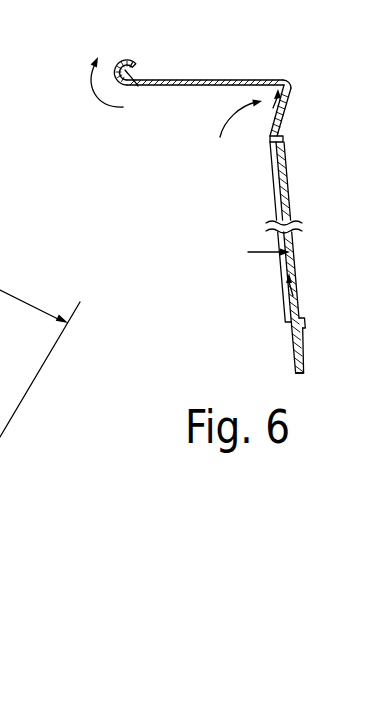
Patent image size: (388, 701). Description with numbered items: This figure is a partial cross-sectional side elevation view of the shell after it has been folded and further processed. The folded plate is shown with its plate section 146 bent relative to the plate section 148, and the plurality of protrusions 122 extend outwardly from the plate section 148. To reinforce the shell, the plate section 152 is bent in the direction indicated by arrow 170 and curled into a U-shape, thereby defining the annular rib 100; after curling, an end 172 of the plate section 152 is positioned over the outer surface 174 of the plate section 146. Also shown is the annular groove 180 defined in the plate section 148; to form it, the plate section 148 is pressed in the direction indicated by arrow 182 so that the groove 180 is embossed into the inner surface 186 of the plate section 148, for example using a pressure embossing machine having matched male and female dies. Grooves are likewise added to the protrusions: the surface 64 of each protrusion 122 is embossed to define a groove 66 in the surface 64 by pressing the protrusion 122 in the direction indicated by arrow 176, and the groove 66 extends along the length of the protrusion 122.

The annular rib 100 is at (138, 86).
The plate section 146 is at (197, 80).
The plate section 148 is at (283, 135).
The plate section 152 is at (127, 62).
The arrow 170 is at (100, 98).
The end 172 is at (136, 62).
The outer surface 174 is at (264, 80).
The arrow 176 is at (252, 252).
The annular groove 180 is at (284, 102).
The arrow 182 is at (218, 118).
The inner surface 186 is at (268, 132).
The surface 64 is at (292, 352).
The groove 66 is at (293, 296).
The protrusion 122 is at (302, 358).